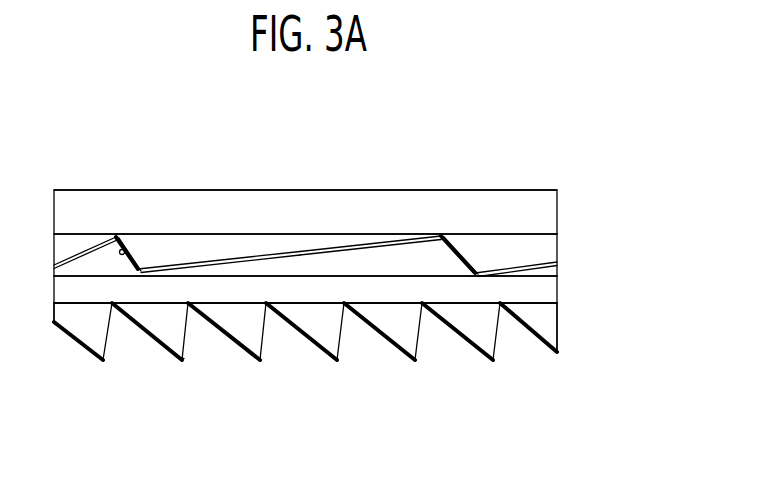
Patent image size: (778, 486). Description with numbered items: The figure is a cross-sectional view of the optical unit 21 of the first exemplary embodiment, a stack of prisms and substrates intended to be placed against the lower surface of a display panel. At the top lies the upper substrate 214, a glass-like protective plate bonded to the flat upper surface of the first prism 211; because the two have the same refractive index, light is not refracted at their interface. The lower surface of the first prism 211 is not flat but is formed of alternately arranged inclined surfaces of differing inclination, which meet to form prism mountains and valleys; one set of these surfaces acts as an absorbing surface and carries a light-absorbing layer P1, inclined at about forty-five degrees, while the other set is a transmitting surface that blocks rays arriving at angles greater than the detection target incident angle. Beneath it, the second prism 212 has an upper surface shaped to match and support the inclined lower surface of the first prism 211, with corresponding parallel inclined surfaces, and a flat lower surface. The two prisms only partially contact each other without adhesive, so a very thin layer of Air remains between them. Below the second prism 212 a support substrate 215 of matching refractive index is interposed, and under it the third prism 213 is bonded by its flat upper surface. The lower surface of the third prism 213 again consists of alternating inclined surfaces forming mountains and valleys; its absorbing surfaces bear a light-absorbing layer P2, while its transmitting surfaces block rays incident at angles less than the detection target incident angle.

The optical unit 21 is at (558, 163).
The upper substrate 214 is at (553, 210).
The first prism 211 is at (341, 206).
The second prism 212 is at (553, 291).
The light-absorbing layer P1 is at (137, 258).
The air layer Air is at (553, 267).
The support substrate 215 is at (553, 312).
The third prism 213 is at (341, 380).
The light-absorbing layer P2 is at (163, 352).